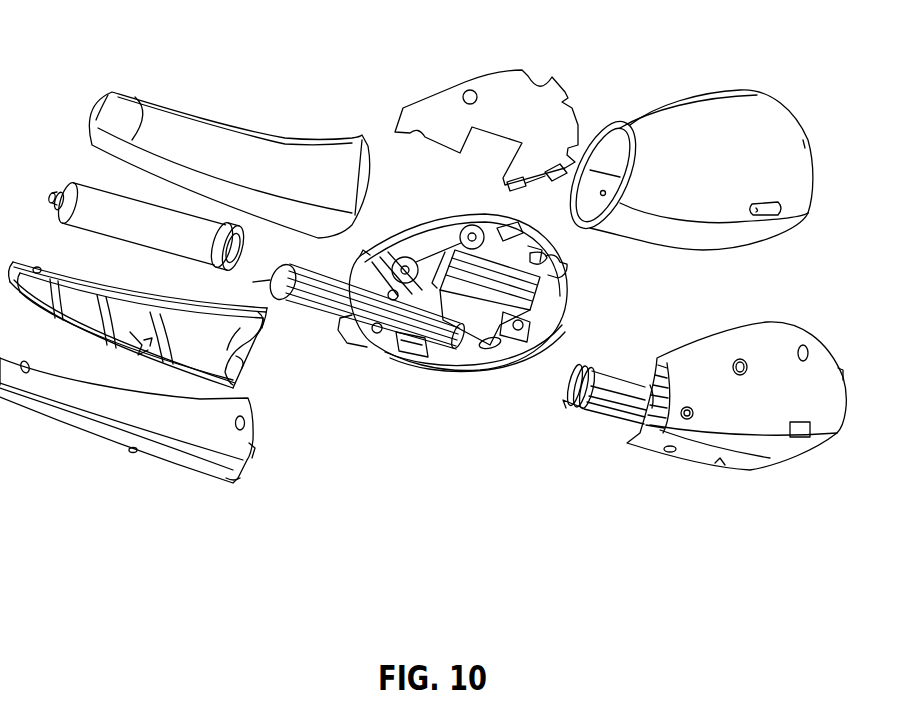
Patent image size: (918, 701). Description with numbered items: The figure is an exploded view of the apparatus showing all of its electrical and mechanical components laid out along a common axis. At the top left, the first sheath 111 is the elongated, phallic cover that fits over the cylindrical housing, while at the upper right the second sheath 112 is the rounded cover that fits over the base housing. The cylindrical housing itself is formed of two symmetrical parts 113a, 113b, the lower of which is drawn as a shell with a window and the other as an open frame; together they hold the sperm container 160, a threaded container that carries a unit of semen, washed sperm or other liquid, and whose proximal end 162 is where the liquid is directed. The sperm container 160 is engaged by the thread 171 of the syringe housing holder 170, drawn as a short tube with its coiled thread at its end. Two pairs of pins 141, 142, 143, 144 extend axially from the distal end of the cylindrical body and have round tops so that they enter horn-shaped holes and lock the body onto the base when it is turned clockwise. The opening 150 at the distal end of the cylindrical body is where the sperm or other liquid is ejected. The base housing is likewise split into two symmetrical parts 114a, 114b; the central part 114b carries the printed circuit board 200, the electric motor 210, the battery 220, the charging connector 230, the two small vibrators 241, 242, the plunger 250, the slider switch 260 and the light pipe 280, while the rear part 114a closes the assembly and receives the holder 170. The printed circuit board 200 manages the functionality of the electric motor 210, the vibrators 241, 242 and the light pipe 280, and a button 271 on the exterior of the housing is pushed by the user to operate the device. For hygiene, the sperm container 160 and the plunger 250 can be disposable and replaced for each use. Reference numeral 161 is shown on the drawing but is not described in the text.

The first sheath 111 is at (182, 127).
The second sheath 112 is at (750, 107).
The symmetrical part of the cylindrical housing 113a is at (77, 437).
The symmetrical part of the cylindrical housing 113b is at (140, 298).
The symmetrical part of the base housing 114a is at (777, 330).
The symmetrical part of the base housing 114b is at (540, 219).
The pin 141 is at (250, 449).
The pin 142 is at (230, 478).
The pin 143 is at (265, 310).
The pin 144 is at (243, 360).
The opening 150 is at (97, 123).
The sperm container 160 is at (176, 248).
The battery holder 161 is at (236, 252).
The proximal end of the sperm container 162 is at (51, 196).
The syringe housing holder 170 is at (608, 413).
The thread 171 is at (573, 407).
The printed circuit board 200 is at (502, 85).
The electric motor 210 is at (468, 352).
The battery 220 is at (530, 288).
The charging connector 230 is at (418, 350).
The small vibrator 241 is at (400, 257).
The small vibrator 242 is at (472, 226).
The plunger 250 is at (315, 296).
The slider switch 260 is at (490, 352).
The button 271 is at (517, 335).
The light pipe 280 is at (560, 264).